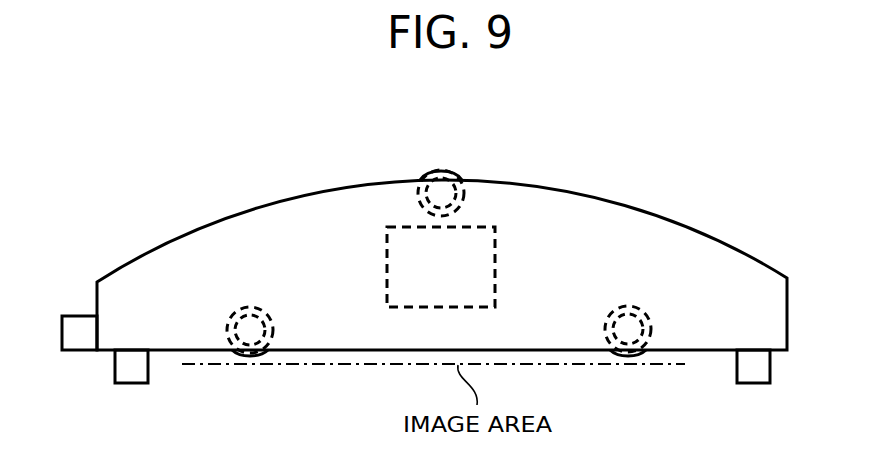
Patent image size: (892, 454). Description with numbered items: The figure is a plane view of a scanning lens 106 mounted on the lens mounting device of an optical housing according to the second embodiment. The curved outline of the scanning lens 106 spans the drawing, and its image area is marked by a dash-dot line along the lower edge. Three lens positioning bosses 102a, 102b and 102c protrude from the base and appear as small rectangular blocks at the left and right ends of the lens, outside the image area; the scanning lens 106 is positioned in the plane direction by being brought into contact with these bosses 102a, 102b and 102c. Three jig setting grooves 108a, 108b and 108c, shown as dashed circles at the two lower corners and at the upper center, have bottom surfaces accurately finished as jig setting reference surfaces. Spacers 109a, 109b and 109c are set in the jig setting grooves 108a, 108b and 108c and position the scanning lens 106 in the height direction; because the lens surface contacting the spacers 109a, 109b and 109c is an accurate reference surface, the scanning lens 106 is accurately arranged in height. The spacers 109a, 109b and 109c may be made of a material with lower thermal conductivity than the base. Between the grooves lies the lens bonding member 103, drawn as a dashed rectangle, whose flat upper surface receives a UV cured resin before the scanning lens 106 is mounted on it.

The lens positioning boss 102a is at (760, 360).
The lens positioning boss 102b is at (130, 378).
The lens positioning boss 102c is at (75, 322).
The lens bonding member 103 is at (494, 252).
The scanning lens 106 is at (622, 205).
The jig setting groove 108a is at (628, 352).
The jig setting groove 108b is at (250, 352).
The jig setting groove 108c is at (428, 172).
The spacer 109a is at (645, 322).
The spacer 109b is at (268, 322).
The spacer 109c is at (455, 200).